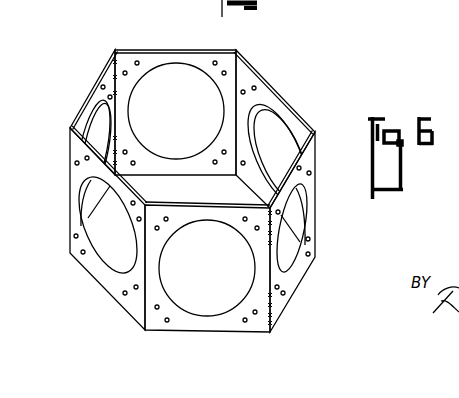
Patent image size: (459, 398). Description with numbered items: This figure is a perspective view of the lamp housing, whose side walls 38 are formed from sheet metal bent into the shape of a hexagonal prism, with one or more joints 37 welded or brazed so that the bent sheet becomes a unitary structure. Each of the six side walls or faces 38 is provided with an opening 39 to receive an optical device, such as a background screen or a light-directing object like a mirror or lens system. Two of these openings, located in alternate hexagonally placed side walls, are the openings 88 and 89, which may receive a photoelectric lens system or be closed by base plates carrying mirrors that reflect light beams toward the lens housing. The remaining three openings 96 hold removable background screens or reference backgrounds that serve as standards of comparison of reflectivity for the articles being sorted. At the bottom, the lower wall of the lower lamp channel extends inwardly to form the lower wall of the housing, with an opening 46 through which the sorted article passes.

The joint 37 is at (125, 48).
The opening 46 is at (189, 78).
The opening 88 is at (97, 117).
The opening 89 is at (280, 130).
The openings 96 is at (110, 256).
The side wall 38 is at (180, 331).
The opening 39 is at (222, 305).